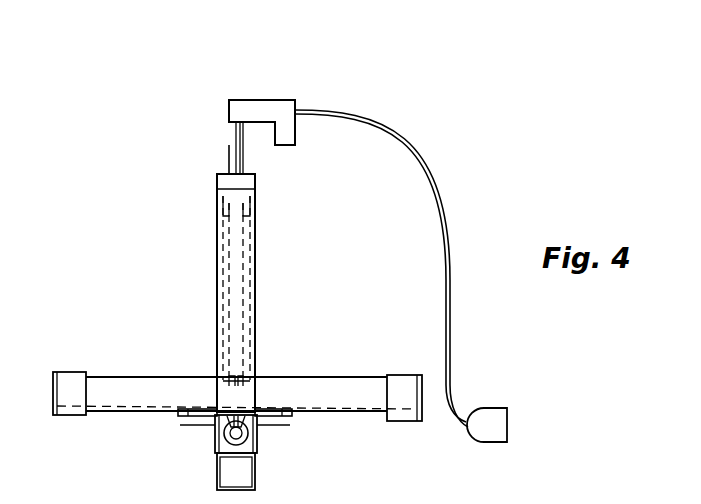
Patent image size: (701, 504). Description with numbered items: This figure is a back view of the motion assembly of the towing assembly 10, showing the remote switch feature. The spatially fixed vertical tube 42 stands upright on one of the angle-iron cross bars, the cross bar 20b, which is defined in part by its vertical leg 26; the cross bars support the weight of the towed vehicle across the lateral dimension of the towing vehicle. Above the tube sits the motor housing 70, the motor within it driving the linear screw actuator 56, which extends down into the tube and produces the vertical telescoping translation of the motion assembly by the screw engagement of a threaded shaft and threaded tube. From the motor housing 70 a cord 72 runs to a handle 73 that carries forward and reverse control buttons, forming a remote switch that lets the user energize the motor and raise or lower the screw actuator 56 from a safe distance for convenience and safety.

The towing assembly 10 is at (172, 106).
The motor housing 70 is at (296, 100).
The linear screw actuator 56 is at (228, 147).
The vertical tube 42 is at (256, 268).
The cross bar 20b is at (133, 390).
The vertical leg 26 is at (350, 390).
The cord 72 is at (423, 152).
The handle 73 is at (490, 417).